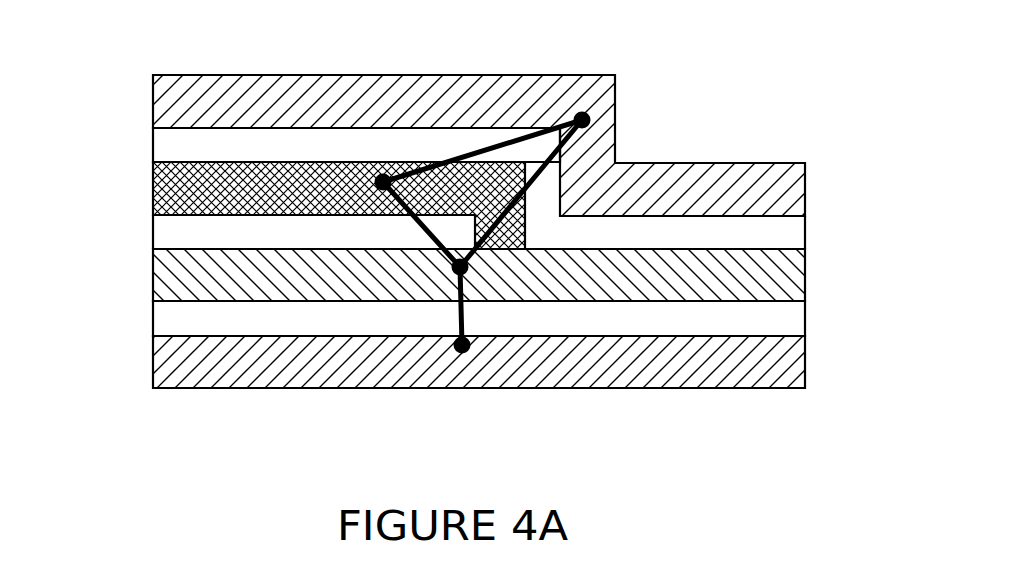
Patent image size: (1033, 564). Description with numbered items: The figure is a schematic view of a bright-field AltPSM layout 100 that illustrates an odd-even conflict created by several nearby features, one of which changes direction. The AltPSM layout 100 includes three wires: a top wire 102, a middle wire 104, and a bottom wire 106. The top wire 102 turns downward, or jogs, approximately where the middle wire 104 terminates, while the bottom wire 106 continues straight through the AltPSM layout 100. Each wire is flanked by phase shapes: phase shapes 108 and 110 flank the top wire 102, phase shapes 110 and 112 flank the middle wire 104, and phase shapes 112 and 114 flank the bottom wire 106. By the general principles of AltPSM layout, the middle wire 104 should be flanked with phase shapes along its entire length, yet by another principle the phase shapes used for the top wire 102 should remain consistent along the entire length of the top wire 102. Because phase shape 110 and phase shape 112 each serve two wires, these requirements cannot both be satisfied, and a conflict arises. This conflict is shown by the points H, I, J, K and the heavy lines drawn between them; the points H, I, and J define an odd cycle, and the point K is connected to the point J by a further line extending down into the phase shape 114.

The AltPSM layout 100 is at (458, 244).
The top wire 102 is at (156, 150).
The middle wire 104 is at (156, 230).
The bottom wire 106 is at (156, 308).
The phase shape 108 is at (156, 103).
The phase shape 110 is at (156, 187).
The phase shape 112 is at (156, 268).
The phase shape 114 is at (156, 350).
The point H is at (574, 112).
The point I is at (374, 176).
The point J is at (452, 268).
The point K is at (462, 353).